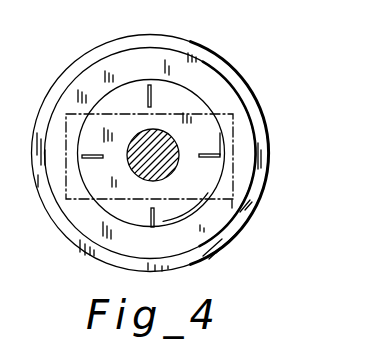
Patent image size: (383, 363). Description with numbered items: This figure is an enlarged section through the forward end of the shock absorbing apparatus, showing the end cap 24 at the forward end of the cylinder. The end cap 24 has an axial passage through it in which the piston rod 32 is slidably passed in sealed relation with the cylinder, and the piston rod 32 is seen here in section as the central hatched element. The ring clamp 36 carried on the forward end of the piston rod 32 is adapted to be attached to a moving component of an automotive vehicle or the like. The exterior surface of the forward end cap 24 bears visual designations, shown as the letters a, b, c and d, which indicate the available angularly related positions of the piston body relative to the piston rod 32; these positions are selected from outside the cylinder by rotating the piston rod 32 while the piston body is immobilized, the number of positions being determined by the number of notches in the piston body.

The end cap 24 is at (196, 104).
The piston rod 32 is at (175, 170).
The ring clamp 36 is at (248, 114).